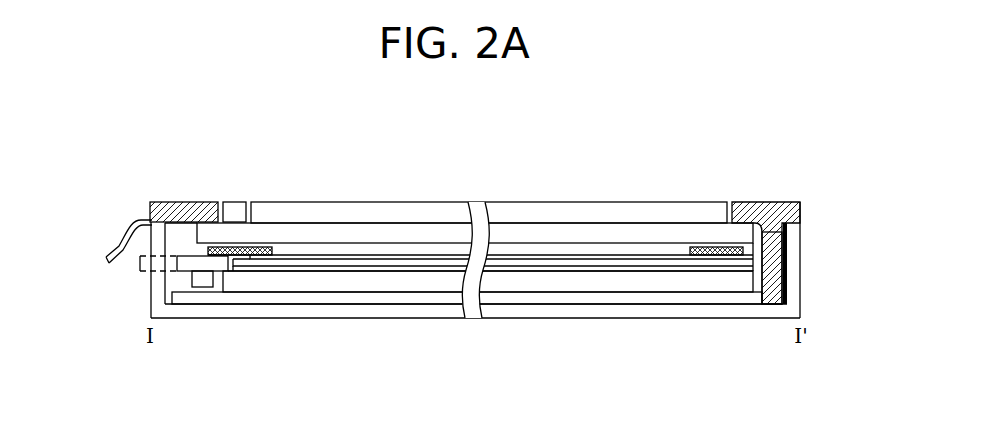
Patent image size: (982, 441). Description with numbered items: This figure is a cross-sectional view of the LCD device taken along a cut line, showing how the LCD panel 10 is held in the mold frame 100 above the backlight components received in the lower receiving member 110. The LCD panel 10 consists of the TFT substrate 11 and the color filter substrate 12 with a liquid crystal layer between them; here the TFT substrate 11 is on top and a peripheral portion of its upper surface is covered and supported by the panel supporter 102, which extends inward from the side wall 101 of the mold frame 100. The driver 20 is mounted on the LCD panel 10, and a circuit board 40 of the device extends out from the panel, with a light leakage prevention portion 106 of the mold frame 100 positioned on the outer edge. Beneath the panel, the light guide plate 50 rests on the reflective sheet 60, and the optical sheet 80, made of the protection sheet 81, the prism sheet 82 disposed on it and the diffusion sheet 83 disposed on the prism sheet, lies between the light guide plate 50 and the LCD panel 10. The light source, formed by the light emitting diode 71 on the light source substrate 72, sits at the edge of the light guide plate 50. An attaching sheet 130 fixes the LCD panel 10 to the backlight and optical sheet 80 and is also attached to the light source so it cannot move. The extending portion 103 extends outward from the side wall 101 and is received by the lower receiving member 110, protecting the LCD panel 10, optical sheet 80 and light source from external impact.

The LCD panel 10 is at (622, 147).
The TFT substrate 11 is at (633, 228).
The color filter substrate 12 is at (683, 207).
The driver 20 is at (233, 203).
The circuit board 40 is at (104, 259).
The light guide plate 50 is at (562, 283).
The reflective sheet 60 is at (515, 297).
The light emitting diode 71 is at (203, 283).
The light source substrate 72 is at (187, 267).
The optical sheet 80 is at (435, 375).
The protection sheet 81 is at (420, 257).
The prism sheet 82 is at (372, 262).
The diffusion sheet 83 is at (325, 268).
The mold frame 100 is at (796, 244).
The side wall 101 is at (778, 273).
The panel supporter 102 is at (748, 202).
The extending portion 103 is at (801, 211).
The light leakage prevention portion 106 is at (183, 203).
The lower receiving member 110 is at (277, 313).
The attaching sheet 130 is at (719, 252).